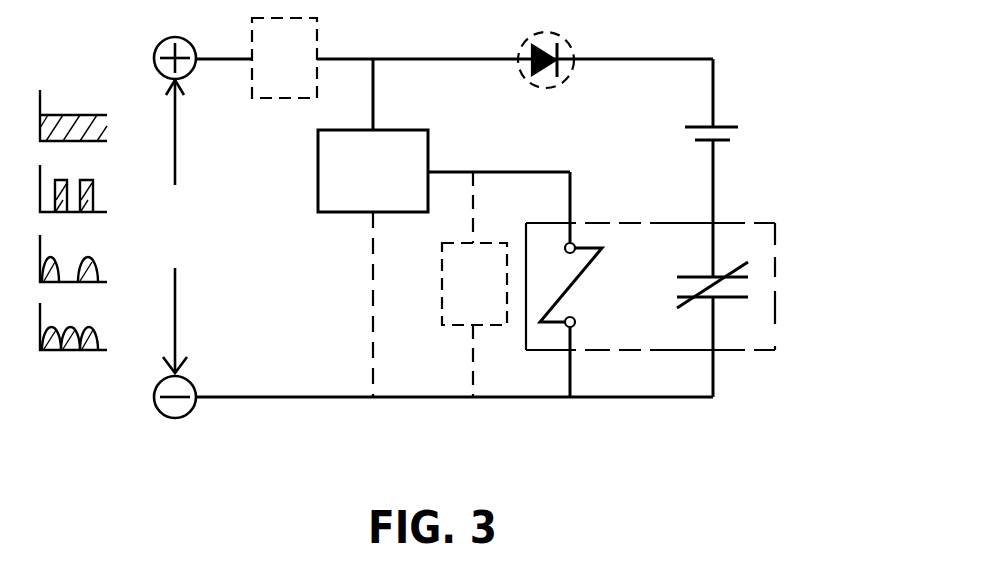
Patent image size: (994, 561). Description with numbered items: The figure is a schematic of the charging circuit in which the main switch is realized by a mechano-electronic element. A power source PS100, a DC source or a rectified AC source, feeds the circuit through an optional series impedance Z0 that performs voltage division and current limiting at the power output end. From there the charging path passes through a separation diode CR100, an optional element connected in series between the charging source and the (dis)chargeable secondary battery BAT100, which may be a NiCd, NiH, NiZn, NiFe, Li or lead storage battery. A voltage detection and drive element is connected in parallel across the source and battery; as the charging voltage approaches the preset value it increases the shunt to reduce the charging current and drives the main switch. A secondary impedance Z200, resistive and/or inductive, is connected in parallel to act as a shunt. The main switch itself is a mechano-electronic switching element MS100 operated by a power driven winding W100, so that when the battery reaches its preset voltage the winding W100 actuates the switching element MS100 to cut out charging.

The power source PS100 is at (118, 227).
The impedance Z0 is at (284, 58).
The separation diode CR100 is at (592, 27).
The (dis)chargeable secondary battery BAT100 is at (771, 142).
The secondary impedance Z200 is at (474, 284).
The power driven winding W100 is at (572, 288).
The mechano-electronic switching element MS100 is at (738, 350).